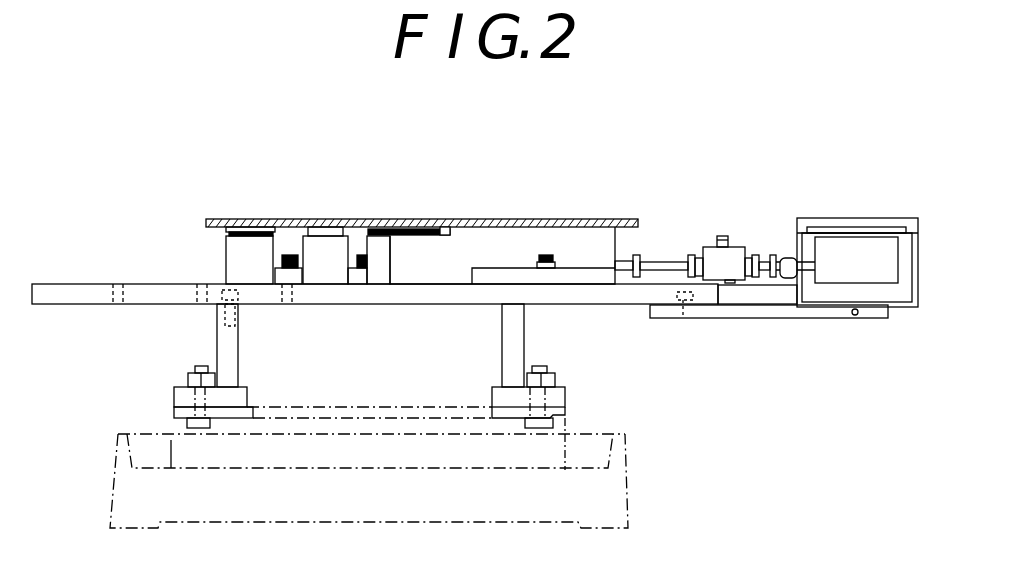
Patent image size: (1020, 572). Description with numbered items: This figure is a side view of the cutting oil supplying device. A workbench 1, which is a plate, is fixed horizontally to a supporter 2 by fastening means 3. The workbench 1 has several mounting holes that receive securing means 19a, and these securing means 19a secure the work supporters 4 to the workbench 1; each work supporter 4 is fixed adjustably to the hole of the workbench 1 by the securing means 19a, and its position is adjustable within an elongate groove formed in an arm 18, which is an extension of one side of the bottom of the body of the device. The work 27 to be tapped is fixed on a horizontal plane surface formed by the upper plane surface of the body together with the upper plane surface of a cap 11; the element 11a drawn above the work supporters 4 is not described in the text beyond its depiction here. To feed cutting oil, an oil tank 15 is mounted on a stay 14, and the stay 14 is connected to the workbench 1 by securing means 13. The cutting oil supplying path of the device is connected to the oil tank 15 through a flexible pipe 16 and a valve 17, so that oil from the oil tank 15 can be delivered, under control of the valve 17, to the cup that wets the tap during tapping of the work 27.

The workbench 1 is at (442, 296).
The supporter 2 is at (222, 342).
The fastening means 3 is at (238, 320).
The work supporter 4 is at (240, 265).
The cap 11 is at (237, 220).
The guide rail 11a is at (248, 220).
The securing means 13 is at (688, 318).
The stay 14 is at (807, 318).
The oil tank 15 is at (880, 222).
The flexible pipe 16 is at (663, 262).
The valve 17 is at (735, 247).
The arm 18 is at (577, 268).
The securing means 19a is at (546, 255).
The work 27 is at (465, 222).